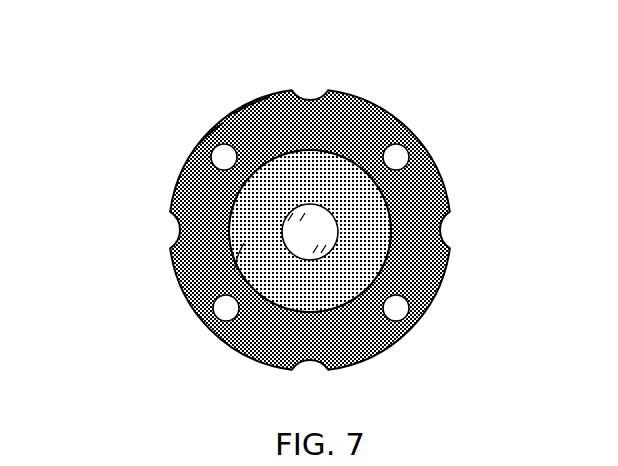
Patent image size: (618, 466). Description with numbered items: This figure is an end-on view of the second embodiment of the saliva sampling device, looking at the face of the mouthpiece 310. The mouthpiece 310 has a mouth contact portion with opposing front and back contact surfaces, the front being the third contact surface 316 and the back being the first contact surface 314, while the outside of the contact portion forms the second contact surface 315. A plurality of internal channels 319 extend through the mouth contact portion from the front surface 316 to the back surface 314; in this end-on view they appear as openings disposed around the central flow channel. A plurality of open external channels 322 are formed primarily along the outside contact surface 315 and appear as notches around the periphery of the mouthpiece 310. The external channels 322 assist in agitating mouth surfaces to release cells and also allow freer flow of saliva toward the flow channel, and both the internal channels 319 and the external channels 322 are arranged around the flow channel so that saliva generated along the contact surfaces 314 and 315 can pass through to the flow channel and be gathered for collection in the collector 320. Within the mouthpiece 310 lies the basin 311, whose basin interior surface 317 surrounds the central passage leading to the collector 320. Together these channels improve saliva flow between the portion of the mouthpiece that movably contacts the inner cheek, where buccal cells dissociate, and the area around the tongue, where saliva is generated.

The mouthpiece 310 is at (148, 175).
The basin 311 is at (270, 283).
The first contact surface 314 is at (202, 122).
The second contact surface 315 is at (238, 97).
The third contact surface 316 is at (262, 105).
The basin interior surface 317 is at (241, 249).
The internal channel 319 is at (392, 304).
The collector 320 is at (314, 226).
The external channel 322 is at (435, 222).